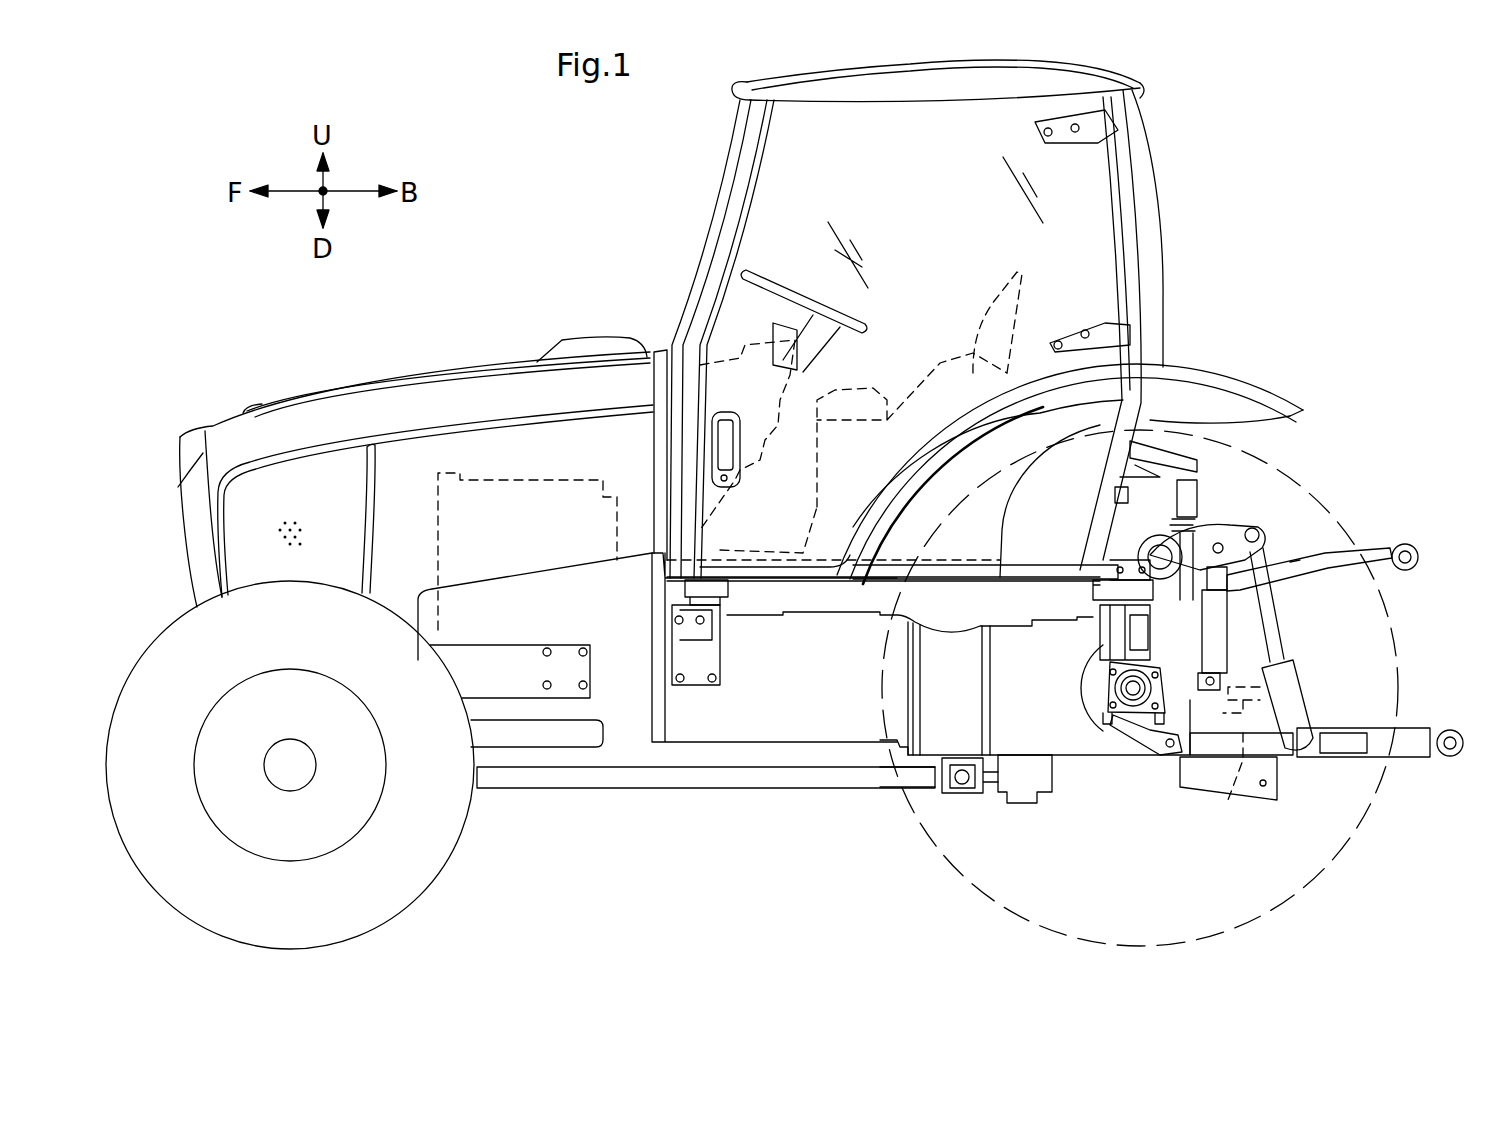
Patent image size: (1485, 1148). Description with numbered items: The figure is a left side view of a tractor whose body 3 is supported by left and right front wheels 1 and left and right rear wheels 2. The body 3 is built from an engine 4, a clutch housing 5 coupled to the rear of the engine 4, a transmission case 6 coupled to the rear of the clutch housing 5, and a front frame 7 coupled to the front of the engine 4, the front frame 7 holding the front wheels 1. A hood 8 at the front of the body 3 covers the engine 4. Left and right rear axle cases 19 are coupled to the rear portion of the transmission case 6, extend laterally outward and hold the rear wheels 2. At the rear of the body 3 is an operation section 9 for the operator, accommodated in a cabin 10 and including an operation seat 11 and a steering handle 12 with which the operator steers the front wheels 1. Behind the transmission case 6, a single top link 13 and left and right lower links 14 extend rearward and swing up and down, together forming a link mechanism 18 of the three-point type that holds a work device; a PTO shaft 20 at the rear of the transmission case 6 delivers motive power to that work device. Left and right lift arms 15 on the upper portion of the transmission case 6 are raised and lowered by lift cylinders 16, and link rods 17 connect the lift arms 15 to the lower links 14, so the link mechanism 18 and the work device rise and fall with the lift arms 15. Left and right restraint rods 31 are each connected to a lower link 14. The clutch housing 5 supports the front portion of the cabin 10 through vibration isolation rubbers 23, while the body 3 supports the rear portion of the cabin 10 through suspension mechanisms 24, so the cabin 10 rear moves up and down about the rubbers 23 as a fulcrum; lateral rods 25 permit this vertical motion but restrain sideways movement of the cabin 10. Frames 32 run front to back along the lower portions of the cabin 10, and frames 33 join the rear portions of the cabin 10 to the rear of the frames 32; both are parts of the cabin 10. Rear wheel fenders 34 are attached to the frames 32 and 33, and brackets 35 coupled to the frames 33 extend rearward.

The front wheel 1 is at (430, 873).
The rear wheel 2 is at (1312, 900).
The body 3 is at (792, 745).
The engine 4 is at (438, 490).
The clutch housing 5 is at (690, 715).
The transmission case 6 is at (1070, 733).
The front frame 7 is at (505, 660).
The hood 8 is at (403, 398).
The operation section 9 is at (790, 167).
The cabin 10 is at (1115, 80).
The operation seat 11 is at (985, 290).
The steering handle 12 is at (797, 290).
The top link 13 is at (1378, 552).
The lower link 14 is at (1410, 750).
The lift arm 15 is at (1228, 530).
The lift cylinder 16 is at (1215, 640).
The link rod 17 is at (1290, 618).
The link mechanism 18 is at (1295, 561).
The rear axle case 19 is at (1130, 710).
The PTO shaft 20 is at (1240, 705).
The vibration isolation rubber 23 is at (718, 610).
The suspension mechanism 24 is at (1195, 500).
The lateral rod 25 is at (1150, 625).
The restraint rod 31 is at (1217, 745).
The frame 32 is at (1030, 572).
The frame 33 is at (1085, 490).
The rear wheel fender 34 is at (1208, 375).
The bracket 35 is at (1148, 455).